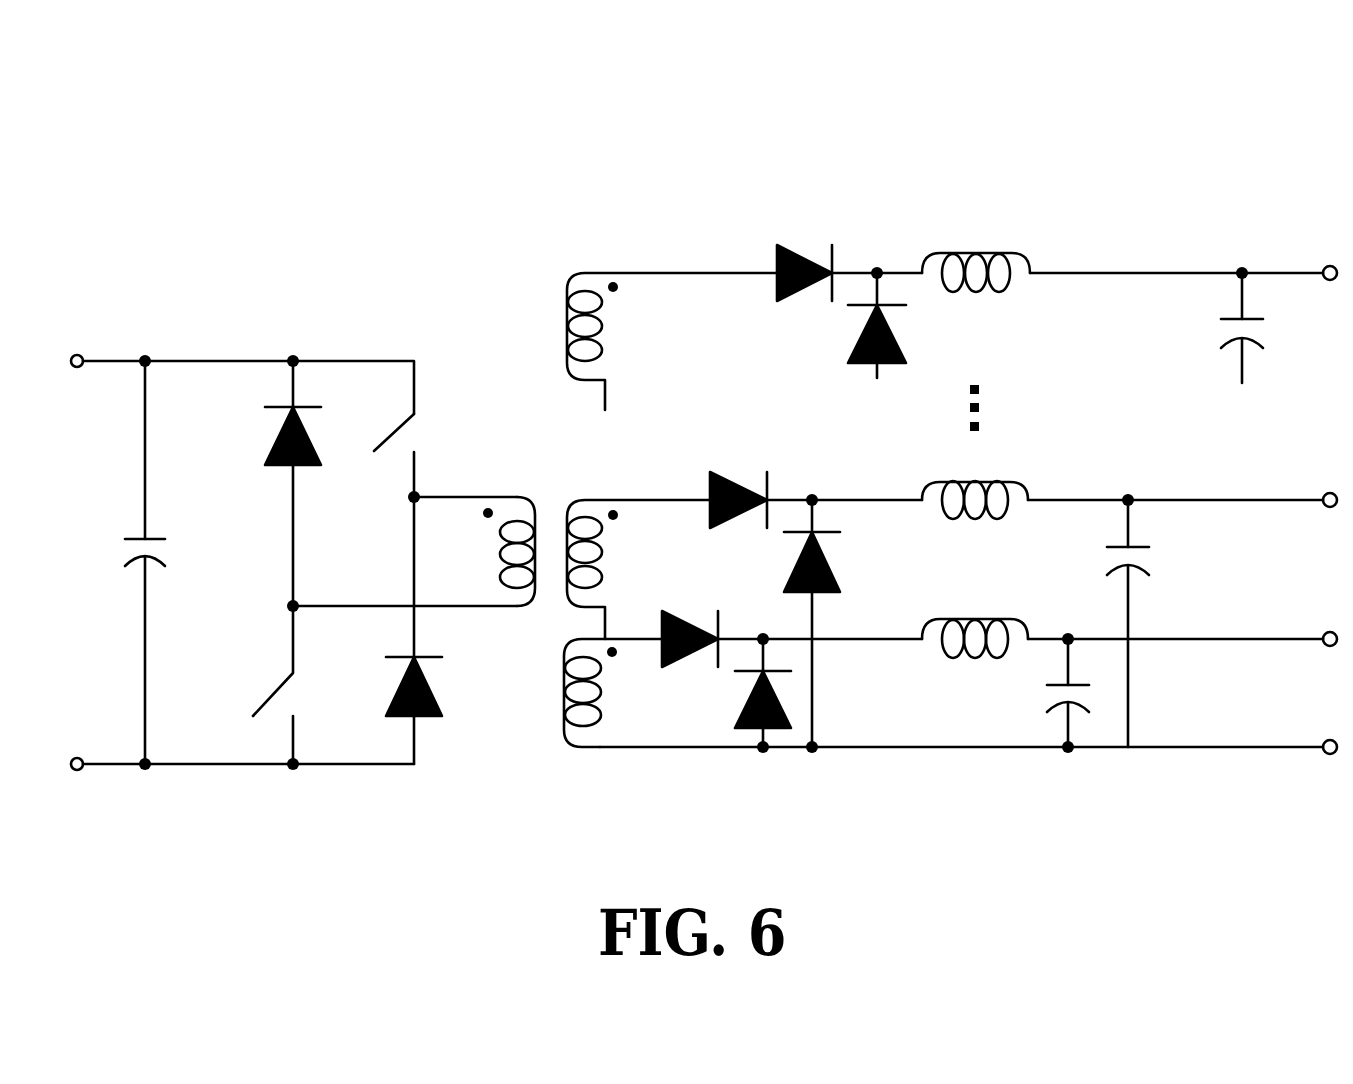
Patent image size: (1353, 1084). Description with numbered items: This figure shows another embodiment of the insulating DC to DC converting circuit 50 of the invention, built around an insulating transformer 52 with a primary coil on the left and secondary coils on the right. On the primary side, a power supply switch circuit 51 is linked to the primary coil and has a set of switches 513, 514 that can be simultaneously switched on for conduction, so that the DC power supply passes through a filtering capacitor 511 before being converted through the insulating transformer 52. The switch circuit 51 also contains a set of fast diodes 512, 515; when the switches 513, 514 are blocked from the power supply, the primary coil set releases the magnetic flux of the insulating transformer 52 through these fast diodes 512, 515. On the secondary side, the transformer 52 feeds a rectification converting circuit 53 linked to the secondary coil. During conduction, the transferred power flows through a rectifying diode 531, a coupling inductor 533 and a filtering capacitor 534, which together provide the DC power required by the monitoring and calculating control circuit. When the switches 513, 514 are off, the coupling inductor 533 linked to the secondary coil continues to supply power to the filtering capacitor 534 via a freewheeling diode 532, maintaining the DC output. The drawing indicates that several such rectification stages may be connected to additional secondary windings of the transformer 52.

The power converter 50 is at (256, 146).
The power supply switch circuit 51 is at (260, 340).
The filtering capacitor 511 is at (137, 530).
The fast diode 512 is at (265, 442).
The switch 513 is at (262, 691).
The switch 514 is at (383, 432).
The fast diode 515 is at (383, 691).
The insulating transformer 52 is at (530, 423).
The rectification converting circuit 53 is at (867, 242).
The rectifying diode 531 is at (678, 603).
The freewheeling diode 532 is at (737, 698).
The coupling inductor 533 is at (978, 612).
The filtering capacitor 534 is at (1045, 697).